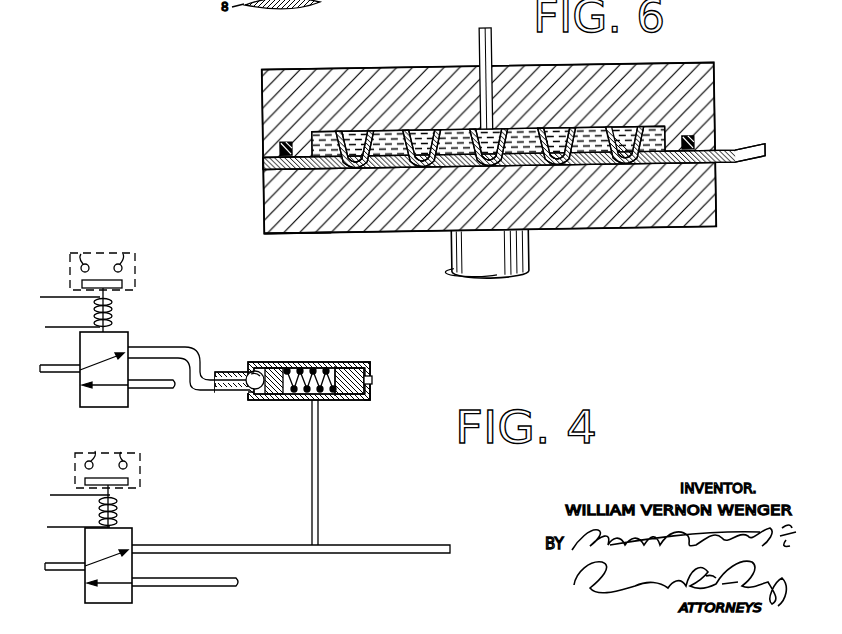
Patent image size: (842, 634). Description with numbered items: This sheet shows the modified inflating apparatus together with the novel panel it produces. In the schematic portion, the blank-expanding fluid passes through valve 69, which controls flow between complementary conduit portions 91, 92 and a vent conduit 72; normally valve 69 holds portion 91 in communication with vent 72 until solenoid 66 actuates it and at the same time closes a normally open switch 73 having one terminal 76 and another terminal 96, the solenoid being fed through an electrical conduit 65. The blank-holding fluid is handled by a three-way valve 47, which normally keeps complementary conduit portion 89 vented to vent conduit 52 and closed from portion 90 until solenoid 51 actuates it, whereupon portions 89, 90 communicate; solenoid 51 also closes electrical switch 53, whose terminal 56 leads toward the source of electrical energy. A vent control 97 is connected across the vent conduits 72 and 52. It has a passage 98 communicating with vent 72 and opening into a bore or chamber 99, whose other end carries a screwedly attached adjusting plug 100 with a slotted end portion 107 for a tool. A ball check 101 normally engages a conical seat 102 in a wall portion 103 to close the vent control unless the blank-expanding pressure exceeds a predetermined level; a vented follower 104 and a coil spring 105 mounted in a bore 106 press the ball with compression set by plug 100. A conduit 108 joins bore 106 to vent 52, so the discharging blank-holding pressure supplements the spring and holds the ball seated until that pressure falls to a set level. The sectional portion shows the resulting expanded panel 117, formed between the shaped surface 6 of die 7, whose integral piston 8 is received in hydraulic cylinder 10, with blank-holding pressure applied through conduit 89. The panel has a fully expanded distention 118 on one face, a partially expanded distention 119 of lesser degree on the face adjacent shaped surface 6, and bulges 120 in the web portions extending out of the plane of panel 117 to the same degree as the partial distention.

In FIG. 6, the hydraulic cylinder 10 is at (715, 88).
In FIG. 6, the shaped surface 6 is at (263, 172).
In FIG. 6, the die 7 is at (283, 232).
In FIG. 6, the integral piston 8 is at (527, 252).
In FIG. 6, the complementary fluid conduit portion 89 is at (481, 44).
In FIG. 4, the complementary fluid conduit portion 89 is at (70, 573).
In FIG. 6, the expanded panel 117 is at (263, 165).
In FIG. 6, the fully expanded distention 118 is at (376, 133).
In FIG. 6, the partially expanded distention 119 is at (353, 168).
In FIG. 6, the bulges 120 is at (394, 168).
In FIG. 4, the switch 73 is at (136, 284).
In FIG. 4, the terminal 76 is at (81, 256).
In FIG. 4, the terminal 96 is at (130, 247).
In FIG. 4, the solenoid 66 is at (113, 317).
In FIG. 4, the valve 69 is at (80, 403).
In FIG. 4, the complementary fluid conduit portion 91 is at (63, 366).
In FIG. 4, the vent conduit 72 is at (162, 348).
In FIG. 4, the complementary fluid conduit portion 92 is at (148, 382).
In FIG. 4, the electrical switch 53 is at (143, 474).
In FIG. 4, the electrical conduit 65 is at (96, 453).
In FIG. 4, the terminal 56 is at (122, 452).
In FIG. 4, the solenoid 51 is at (118, 518).
In FIG. 4, the three-way valve 47 is at (103, 603).
In FIG. 4, the vent conduit 52 is at (182, 547).
In FIG. 4, the complementary fluid conduit portion 90 is at (216, 587).
In FIG. 4, the vent control 97 is at (286, 401).
In FIG. 4, the passage 98 is at (241, 371).
In FIG. 4, the ball check 101 is at (262, 370).
In FIG. 4, the conical seat 102 is at (254, 402).
In FIG. 4, the wall portion 103 is at (250, 396).
In FIG. 4, the vented follower 104 is at (279, 368).
In FIG. 4, the bore or chamber 99 is at (310, 368).
In FIG. 4, the coil spring 105 is at (338, 368).
In FIG. 4, the bore 106 is at (324, 395).
In FIG. 4, the adjusting plug 100 is at (368, 364).
In FIG. 4, the slotted end portion 107 is at (372, 380).
In FIG. 4, the conduit 108 is at (319, 471).